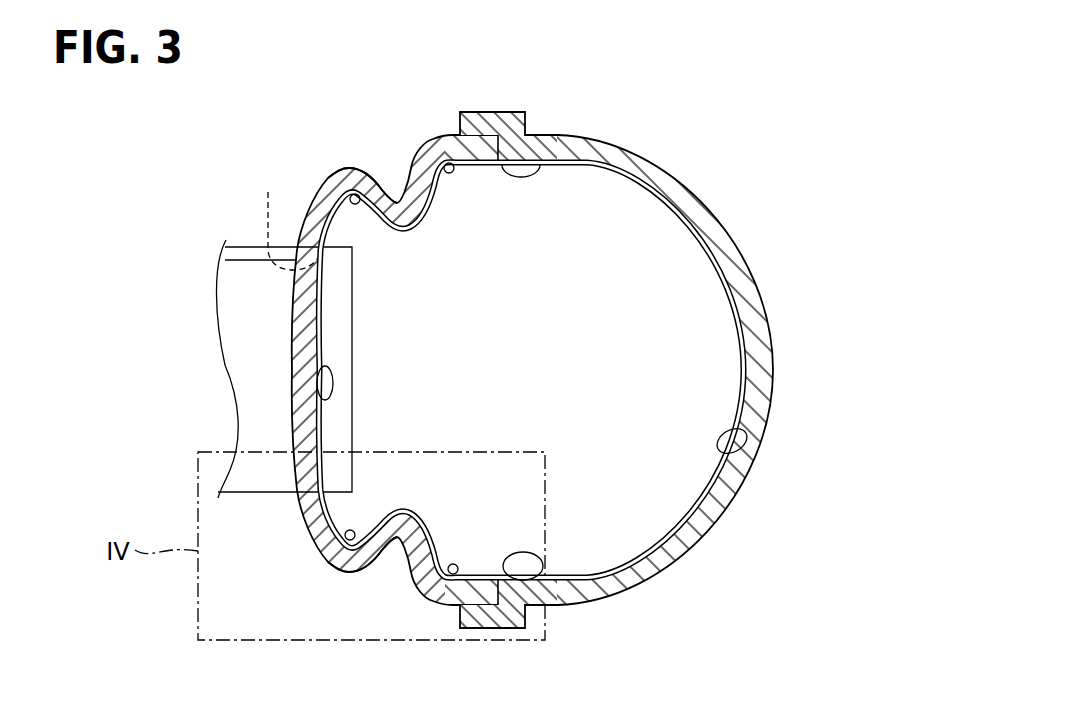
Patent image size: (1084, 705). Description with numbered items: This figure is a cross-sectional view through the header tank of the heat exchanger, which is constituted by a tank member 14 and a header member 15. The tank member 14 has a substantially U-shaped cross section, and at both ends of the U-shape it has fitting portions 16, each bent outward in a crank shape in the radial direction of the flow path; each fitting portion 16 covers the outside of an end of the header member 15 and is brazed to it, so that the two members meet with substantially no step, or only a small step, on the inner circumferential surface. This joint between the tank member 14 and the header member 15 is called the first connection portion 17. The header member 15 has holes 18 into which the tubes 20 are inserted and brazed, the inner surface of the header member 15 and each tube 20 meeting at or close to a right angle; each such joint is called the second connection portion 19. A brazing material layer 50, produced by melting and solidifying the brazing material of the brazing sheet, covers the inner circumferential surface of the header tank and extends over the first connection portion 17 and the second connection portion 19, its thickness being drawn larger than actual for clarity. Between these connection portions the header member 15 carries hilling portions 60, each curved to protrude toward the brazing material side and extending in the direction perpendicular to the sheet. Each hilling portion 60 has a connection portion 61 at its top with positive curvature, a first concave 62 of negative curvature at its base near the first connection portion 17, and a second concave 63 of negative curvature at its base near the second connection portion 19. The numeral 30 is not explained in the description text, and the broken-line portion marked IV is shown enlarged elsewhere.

The tank member 14 is at (772, 340).
The header member 15 is at (332, 188).
The fitting portions 16 is at (484, 114).
The first connection portion 17 is at (554, 155).
The holes 18 is at (286, 213).
The second connection portion 19 is at (318, 402).
The tubes 20 is at (233, 336).
The seal member 30 is at (732, 107).
The brazing material layer 50 is at (746, 432).
The hilling portions 60 is at (400, 200).
The connection portion 61 is at (413, 229).
The first concave 62 is at (447, 163).
The second concave 63 is at (353, 166).